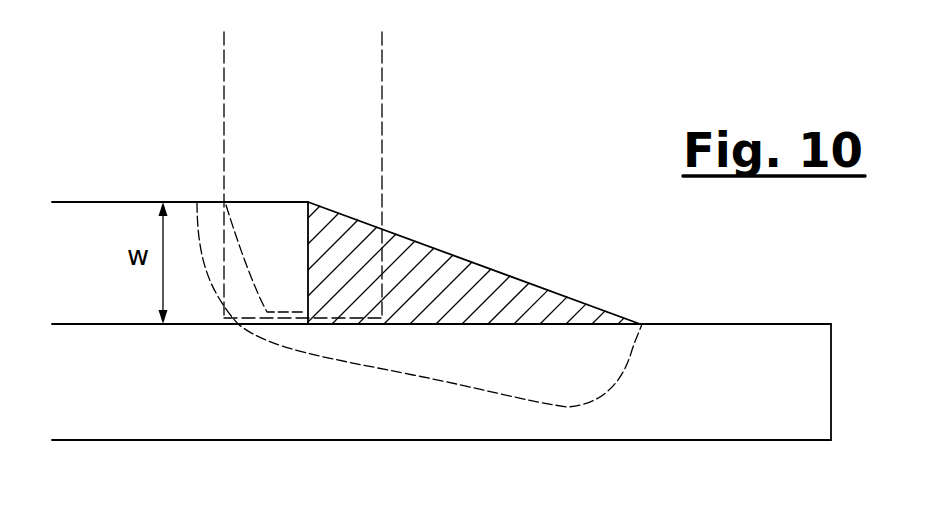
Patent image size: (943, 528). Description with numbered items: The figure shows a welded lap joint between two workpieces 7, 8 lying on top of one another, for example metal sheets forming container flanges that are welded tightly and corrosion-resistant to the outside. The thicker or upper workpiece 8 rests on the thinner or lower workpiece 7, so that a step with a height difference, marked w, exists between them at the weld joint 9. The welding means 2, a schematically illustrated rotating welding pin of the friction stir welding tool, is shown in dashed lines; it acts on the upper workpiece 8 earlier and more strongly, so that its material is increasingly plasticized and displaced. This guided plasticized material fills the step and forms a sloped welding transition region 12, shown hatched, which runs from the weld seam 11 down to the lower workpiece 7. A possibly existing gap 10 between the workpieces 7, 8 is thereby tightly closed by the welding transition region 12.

The welding means 2 is at (263, 65).
The lower workpiece 7 is at (163, 392).
The upper workpiece 8 is at (108, 227).
The weld joint 9 is at (322, 184).
The gap 10 is at (120, 325).
The weld seam 11 is at (439, 236).
The welding transition region 12 is at (512, 302).